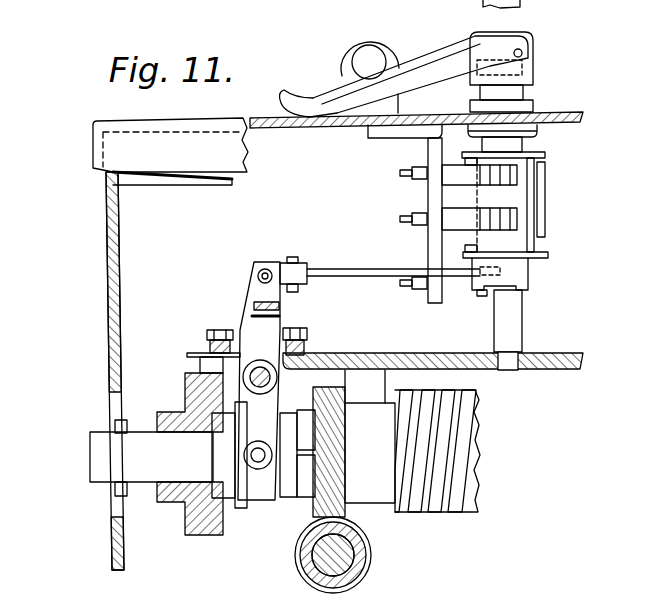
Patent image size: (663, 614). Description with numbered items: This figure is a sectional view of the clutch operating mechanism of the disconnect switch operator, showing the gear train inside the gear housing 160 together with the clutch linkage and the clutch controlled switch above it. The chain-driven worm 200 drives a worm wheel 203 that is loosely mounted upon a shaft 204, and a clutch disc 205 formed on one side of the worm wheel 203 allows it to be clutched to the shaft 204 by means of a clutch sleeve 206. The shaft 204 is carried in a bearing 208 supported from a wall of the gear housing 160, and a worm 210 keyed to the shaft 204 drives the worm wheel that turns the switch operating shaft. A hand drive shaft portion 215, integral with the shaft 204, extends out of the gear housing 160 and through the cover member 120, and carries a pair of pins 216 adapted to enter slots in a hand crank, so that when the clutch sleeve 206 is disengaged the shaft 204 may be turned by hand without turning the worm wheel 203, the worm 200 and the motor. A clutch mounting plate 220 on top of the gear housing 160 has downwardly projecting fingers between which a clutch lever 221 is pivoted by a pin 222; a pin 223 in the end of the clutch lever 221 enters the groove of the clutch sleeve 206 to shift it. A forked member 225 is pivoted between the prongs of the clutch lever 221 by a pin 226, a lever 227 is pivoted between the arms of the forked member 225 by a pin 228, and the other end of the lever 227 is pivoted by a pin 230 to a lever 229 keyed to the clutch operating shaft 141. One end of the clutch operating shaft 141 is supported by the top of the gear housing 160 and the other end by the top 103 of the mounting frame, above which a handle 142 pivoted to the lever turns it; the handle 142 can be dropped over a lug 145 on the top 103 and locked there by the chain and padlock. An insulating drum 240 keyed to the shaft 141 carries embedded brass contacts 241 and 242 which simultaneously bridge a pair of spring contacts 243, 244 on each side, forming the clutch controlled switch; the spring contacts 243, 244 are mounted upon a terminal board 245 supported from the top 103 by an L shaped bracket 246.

The top of the mounting frame 103 is at (563, 110).
The cover member 120 is at (110, 335).
The clutch operating shaft 141 is at (510, 308).
The handle 142 is at (433, 58).
The lug 145 is at (362, 42).
The gear housing 160 is at (188, 507).
The worm 200 is at (365, 570).
The worm wheel 203 is at (330, 483).
The shaft 204 is at (305, 475).
The clutch disc 205 is at (305, 428).
The clutch sleeve 206 is at (258, 500).
The bearing 208 is at (370, 386).
The worm 210 is at (450, 452).
The hand drive shaft portion 215 is at (100, 448).
The pins 216 is at (115, 422).
The clutch mounting plate 220 is at (208, 345).
The clutch lever 221 is at (255, 325).
The pin 222 is at (305, 362).
The pin 223 is at (250, 454).
The forked member 225 is at (281, 266).
The pin 226 is at (258, 274).
The lever 227 is at (355, 278).
The pin 228 is at (292, 260).
The lever 229 is at (522, 272).
The pin 230 is at (481, 297).
The drum 240 is at (513, 190).
The brass contact 241 is at (540, 207).
The brass contact 242 is at (475, 190).
The spring contact 243 is at (450, 173).
The spring contact 244 is at (450, 217).
The terminal board 245 is at (435, 296).
The L shaped bracket 246 is at (370, 130).